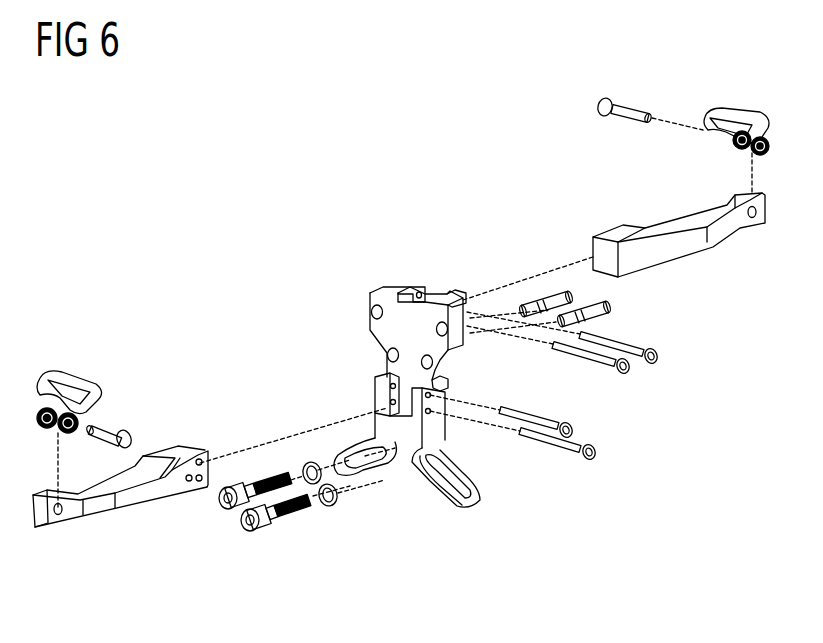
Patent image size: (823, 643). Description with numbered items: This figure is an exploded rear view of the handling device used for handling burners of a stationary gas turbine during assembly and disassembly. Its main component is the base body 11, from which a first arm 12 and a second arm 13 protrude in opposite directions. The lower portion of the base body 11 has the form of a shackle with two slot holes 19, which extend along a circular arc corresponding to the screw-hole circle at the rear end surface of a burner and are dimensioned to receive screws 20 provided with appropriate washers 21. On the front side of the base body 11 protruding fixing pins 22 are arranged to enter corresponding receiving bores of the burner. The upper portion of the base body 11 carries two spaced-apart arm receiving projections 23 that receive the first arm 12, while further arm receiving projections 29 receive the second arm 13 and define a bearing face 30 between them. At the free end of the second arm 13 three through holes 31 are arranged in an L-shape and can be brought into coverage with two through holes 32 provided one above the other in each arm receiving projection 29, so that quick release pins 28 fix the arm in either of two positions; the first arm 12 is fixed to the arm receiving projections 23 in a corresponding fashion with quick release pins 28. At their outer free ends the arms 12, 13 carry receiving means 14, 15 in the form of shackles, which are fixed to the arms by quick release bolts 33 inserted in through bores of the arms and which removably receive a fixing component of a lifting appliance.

The base body 11 is at (370, 282).
The first arm 12 is at (680, 225).
The second arm 13 is at (133, 497).
The receiving means 14 is at (730, 112).
The receiving means 15 is at (72, 374).
The slot holes 19 is at (374, 463).
The screws 20 is at (250, 492).
The washers 21 is at (306, 463).
The fixing pins 22 is at (548, 301).
The arm receiving projections 23 is at (412, 288).
The quick release pins 28 is at (620, 348).
The arm receiving projections 29 is at (377, 378).
The bearing face 30 is at (395, 418).
The through holes 31 is at (203, 452).
The through holes 32 is at (388, 396).
The quick release bolts 33 is at (632, 106).